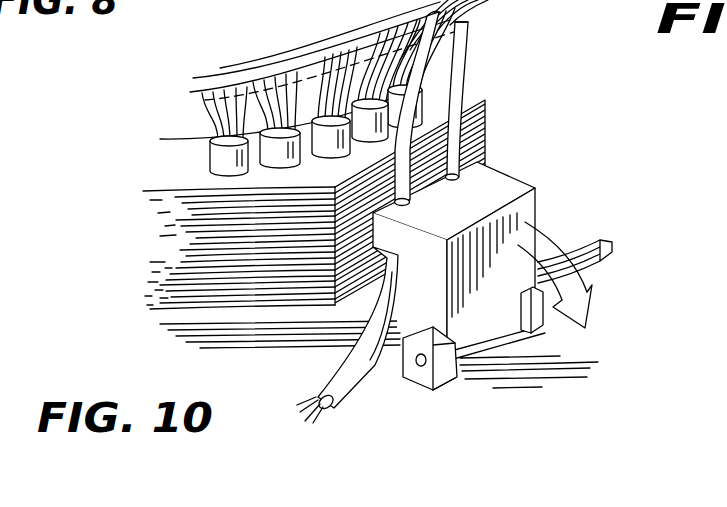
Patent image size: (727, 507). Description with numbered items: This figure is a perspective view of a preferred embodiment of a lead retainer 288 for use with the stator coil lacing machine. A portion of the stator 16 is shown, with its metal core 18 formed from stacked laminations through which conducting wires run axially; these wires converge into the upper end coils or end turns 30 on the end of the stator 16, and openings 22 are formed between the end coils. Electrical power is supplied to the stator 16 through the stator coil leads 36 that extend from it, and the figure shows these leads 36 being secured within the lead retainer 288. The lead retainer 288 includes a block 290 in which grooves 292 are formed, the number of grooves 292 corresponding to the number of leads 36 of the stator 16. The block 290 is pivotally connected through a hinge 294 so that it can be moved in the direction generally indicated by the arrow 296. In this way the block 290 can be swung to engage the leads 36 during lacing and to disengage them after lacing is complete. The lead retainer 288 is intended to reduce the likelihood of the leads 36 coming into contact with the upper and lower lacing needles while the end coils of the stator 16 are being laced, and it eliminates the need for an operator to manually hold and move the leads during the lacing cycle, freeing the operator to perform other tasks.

The stator 16 is at (148, 207).
The metal core 18 is at (200, 242).
The openings 22 is at (302, 97).
The upper end coils or end turns 30 is at (290, 75).
The stator coil leads 36 is at (447, 136).
The lead retainer 288 is at (540, 185).
The block 290 is at (493, 308).
The grooves 292 is at (415, 198).
The hinge 294 is at (420, 366).
The arrow 296 is at (582, 284).